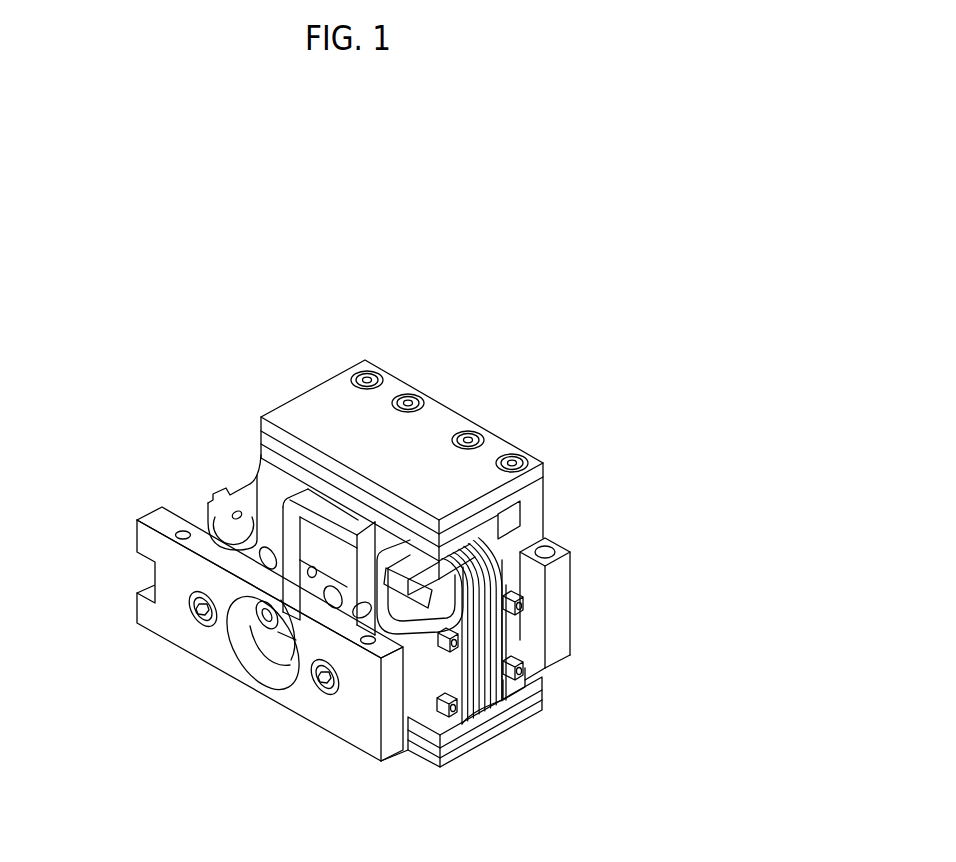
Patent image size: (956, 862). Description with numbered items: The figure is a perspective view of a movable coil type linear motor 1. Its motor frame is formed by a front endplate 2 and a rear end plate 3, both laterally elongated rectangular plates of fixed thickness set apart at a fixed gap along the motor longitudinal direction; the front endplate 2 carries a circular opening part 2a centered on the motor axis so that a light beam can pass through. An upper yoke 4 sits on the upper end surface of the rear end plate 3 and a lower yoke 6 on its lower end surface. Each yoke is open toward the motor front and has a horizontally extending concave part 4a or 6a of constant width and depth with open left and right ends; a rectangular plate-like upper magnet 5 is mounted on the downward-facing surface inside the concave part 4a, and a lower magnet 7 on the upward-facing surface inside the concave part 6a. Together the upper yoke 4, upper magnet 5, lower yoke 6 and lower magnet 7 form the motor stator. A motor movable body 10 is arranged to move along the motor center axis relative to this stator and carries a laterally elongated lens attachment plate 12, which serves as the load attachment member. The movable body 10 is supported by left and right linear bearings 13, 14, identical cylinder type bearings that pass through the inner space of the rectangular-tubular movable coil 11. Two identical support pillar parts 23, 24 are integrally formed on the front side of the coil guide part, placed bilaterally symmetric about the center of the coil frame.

The movable coil type linear motor 1 is at (157, 420).
The front endplate 2 is at (292, 714).
The opening part 2a is at (262, 662).
The rear end plate 3 is at (579, 598).
The upper yoke 4 is at (531, 482).
The concave part 4a is at (514, 517).
The upper magnet 5 is at (492, 522).
The lower yoke 6 is at (482, 757).
The concave part 6a is at (508, 690).
The lower magnet 7 is at (447, 741).
The motor movable body 10 is at (509, 638).
The movable coil 11 is at (491, 707).
The lens attachment plate 12 is at (329, 556).
The linear bearing 13 is at (306, 516).
The linear bearing 14 is at (428, 592).
The support pillar part 23 is at (263, 511).
The support pillar part 24 is at (359, 560).